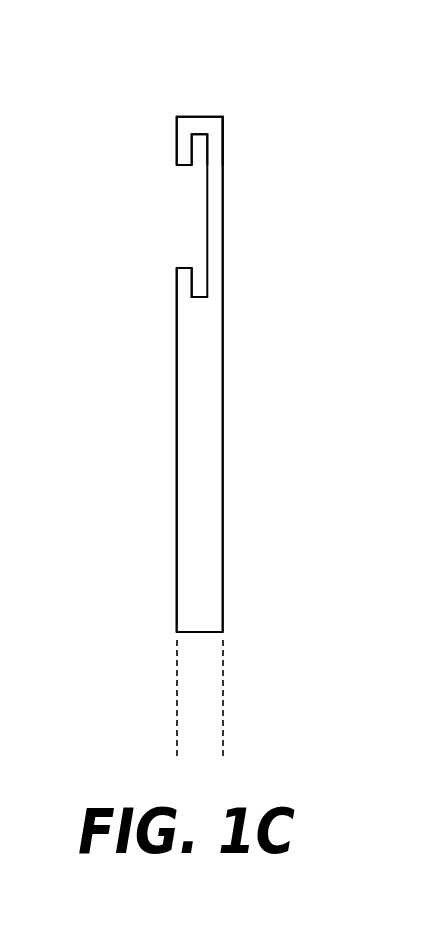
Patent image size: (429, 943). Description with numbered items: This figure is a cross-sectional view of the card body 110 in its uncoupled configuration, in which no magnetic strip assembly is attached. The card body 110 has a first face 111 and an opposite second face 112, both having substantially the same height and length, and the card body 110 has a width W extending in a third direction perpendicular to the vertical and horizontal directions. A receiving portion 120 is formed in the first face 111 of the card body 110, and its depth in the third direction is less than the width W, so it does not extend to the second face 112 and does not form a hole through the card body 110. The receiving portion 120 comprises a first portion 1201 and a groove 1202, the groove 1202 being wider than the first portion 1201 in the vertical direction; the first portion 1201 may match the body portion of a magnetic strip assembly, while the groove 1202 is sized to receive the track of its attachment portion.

The card body 110 is at (200, 104).
The receiving portion 120 is at (133, 186).
The first face 111 is at (161, 523).
The second face 112 is at (239, 540).
The first portion 1201 is at (181, 256).
The groove 1202 is at (204, 291).
The width W is at (133, 703).